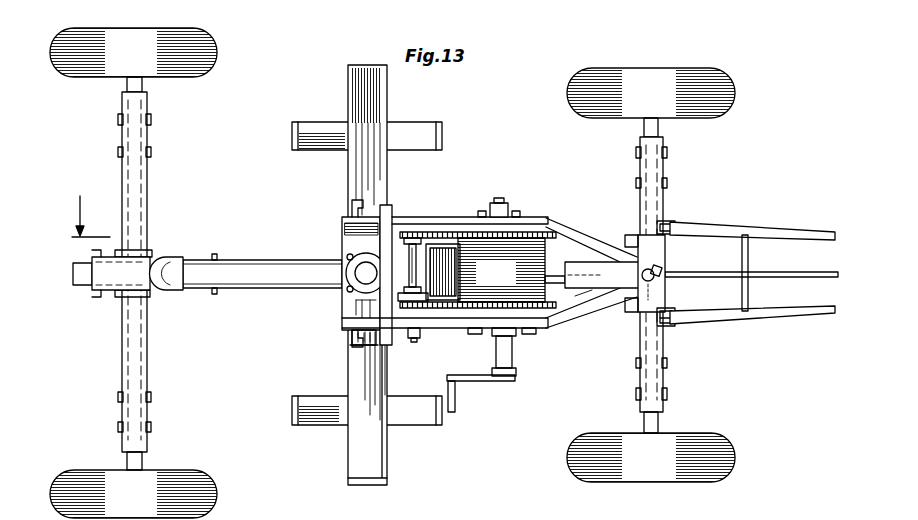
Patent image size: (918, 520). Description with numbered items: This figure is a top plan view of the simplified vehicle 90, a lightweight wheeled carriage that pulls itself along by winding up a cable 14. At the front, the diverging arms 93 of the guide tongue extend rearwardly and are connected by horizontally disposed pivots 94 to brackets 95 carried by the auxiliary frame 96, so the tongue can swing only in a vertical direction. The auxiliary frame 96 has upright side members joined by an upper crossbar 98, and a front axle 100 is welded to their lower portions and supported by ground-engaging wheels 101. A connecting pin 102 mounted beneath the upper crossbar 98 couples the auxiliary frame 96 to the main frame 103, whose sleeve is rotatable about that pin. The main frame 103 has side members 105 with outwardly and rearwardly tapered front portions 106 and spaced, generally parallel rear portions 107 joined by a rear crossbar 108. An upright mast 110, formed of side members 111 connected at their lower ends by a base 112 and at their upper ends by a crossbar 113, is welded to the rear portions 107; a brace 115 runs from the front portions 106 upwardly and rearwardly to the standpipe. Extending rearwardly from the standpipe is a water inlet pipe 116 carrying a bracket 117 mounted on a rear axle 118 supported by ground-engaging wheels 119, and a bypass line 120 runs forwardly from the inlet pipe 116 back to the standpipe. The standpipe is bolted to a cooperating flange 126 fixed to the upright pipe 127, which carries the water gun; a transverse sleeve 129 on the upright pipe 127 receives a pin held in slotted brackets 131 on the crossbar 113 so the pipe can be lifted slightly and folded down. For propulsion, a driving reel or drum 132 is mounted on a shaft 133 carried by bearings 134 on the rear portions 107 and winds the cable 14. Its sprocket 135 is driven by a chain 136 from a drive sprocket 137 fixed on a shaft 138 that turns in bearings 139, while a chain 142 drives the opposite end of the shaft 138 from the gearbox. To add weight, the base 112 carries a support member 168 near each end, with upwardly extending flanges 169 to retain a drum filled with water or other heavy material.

The cable 14 is at (812, 273).
The vehicle 90 is at (534, 410).
The diverging arms 93 is at (802, 232).
The pivots 94 is at (668, 313).
The brackets 95 is at (666, 225).
The auxiliary frame 96 is at (634, 317).
The upper crossbar 98 is at (658, 248).
The front axle 100 is at (658, 380).
The ground-engaging wheels 101 is at (712, 118).
The connecting pin 102 is at (655, 278).
The main frame 103 is at (548, 333).
The side members 105 is at (471, 340).
The front portions 106 is at (612, 221).
The rear portions 107 is at (504, 236).
The rear crossbar 108 is at (363, 309).
The upright mast 110 is at (347, 343).
The side members 111 is at (358, 198).
The base 112 is at (374, 386).
The crossbar 113 is at (387, 203).
The brace 115 is at (594, 287).
The water inlet pipe 116 is at (232, 259).
The bracket 117 is at (113, 300).
The rear axle 118 is at (133, 349).
The ground-engaging wheels 119 is at (170, 78).
The bypass line 120 is at (258, 278).
The cooperating flange 126 is at (344, 263).
The upright pipe 127 is at (355, 273).
The transverse sleeve 129 is at (348, 291).
The slotted brackets 131 is at (375, 300).
The driving reel or drum 132 is at (574, 266).
The shaft 133 is at (503, 210).
The bearings 134 is at (488, 211).
The sprocket 135 is at (523, 230).
The chain 136 is at (443, 232).
The drive sprocket 137 is at (415, 238).
The shaft 138 is at (386, 243).
The bearings 139 is at (421, 288).
The chain 142 is at (401, 318).
The support member 168 is at (323, 144).
The upwardly extending flanges 169 is at (372, 66).